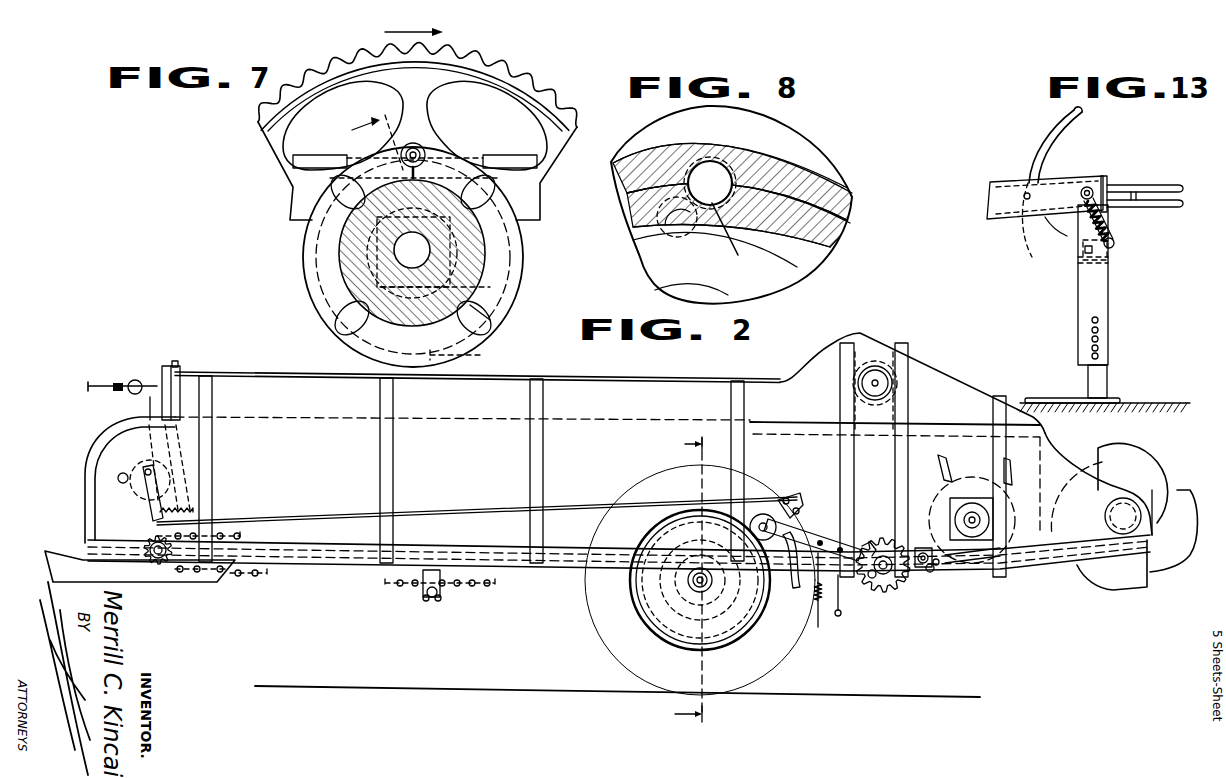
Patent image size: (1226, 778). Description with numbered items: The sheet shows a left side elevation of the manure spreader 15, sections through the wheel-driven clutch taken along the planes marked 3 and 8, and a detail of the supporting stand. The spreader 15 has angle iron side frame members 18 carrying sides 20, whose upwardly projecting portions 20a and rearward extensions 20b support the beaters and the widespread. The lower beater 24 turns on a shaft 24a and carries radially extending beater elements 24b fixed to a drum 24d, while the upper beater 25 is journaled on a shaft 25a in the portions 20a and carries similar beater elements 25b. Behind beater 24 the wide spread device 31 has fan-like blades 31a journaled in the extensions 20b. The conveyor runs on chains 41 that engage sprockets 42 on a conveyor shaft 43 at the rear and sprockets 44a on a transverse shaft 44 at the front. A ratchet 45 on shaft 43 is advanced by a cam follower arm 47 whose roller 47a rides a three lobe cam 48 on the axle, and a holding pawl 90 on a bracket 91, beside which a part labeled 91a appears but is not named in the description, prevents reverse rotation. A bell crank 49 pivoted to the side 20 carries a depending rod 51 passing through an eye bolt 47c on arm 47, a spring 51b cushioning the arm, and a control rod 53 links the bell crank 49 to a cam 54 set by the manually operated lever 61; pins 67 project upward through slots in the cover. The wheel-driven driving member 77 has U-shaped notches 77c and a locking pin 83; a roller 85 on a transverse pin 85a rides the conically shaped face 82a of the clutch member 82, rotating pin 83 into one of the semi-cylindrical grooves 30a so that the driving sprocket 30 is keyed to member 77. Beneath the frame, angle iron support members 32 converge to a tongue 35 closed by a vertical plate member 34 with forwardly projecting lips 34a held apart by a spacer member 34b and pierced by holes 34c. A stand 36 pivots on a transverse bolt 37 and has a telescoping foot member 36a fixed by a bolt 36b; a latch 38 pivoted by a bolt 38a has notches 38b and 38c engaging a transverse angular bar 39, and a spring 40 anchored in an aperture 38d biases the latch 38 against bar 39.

In FIG. 2, the section line 3- 3 is at (680, 581).
In FIG. 7, the bolt 8 is at (430, 158).
In FIG. 2, the manure spreader 15 is at (331, 579).
In FIG. 2, the side frame members 18 is at (1050, 567).
In FIG. 2, the sides 20 is at (492, 458).
In FIG. 2, the upwardly projecting portions 20a is at (957, 373).
In FIG. 2, the side extensions 20b is at (1057, 457).
In FIG. 2, the beater 24 is at (1000, 574).
In FIG. 2, the shaft 24a is at (972, 517).
In FIG. 2, the beater elements 24b is at (1008, 472).
In FIG. 2, the drum 24d is at (945, 472).
In FIG. 2, the beater 25 is at (910, 421).
In FIG. 2, the shaft 25a is at (875, 380).
In FIG. 2, the beater elements 25b is at (910, 358).
In FIG. 7, the driving sprocket 30 is at (542, 87).
In FIG. 8, the driving sprocket 30 is at (791, 167).
In FIG. 7, the semi-cylindrical transverse grooves 30a is at (485, 203).
In FIG. 8, the semi-cylindrical transverse grooves 30a is at (719, 168).
In FIG. 2, the wide spread device 31 is at (1125, 600).
In FIG. 2, the fan-like blades 31a is at (1146, 456).
In FIG. 13, the support members 32 is at (1003, 213).
In FIG. 13, the vertical plate member 34 is at (1113, 184).
In FIG. 13, the lips 34a is at (1157, 185).
In FIG. 13, the spacer member 34b is at (1123, 192).
In FIG. 13, the holes 34c is at (1182, 186).
In FIG. 13, the tongue 35 is at (1100, 172).
In FIG. 13, the stand 36 is at (1105, 334).
In FIG. 13, the adjustable foot member 36a is at (1097, 381).
In FIG. 13, the bolt 36b is at (1092, 338).
In FIG. 13, the transverse bolt 37 is at (1085, 187).
In FIG. 13, the latch 38 is at (1060, 140).
In FIG. 13, the transverse bolt 38a is at (1103, 250).
In FIG. 13, the notch 38b is at (1067, 250).
In FIG. 13, the notch 38c is at (1025, 193).
In FIG. 13, the aperture 38d is at (1114, 245).
In FIG. 13, the transverse angular bar 39 is at (1033, 227).
In FIG. 13, the spring 40 is at (1110, 227).
In FIG. 2, the conveyor chains 41 is at (481, 590).
In FIG. 2, the sprockets 42 is at (871, 578).
In FIG. 2, the conveyor shaft 43 is at (883, 576).
In FIG. 2, the transverse shaft 44 is at (155, 561).
In FIG. 2, the sprockets 44a is at (160, 570).
In FIG. 2, the ratchet 45 is at (867, 546).
In FIG. 2, the cam follower arm 47 is at (822, 540).
In FIG. 2, the roller 47a is at (765, 514).
In FIG. 2, the eye bolt 47c is at (797, 589).
In FIG. 2, the three lobe cam 48 is at (727, 638).
In FIG. 2, the bell crank 49 is at (800, 506).
In FIG. 2, the depending rod 51 is at (818, 627).
In FIG. 2, the spring 51b is at (838, 616).
In FIG. 2, the control rod 53 is at (485, 510).
In FIG. 2, the cam 54 is at (143, 493).
In FIG. 2, the manually operated lever 61 is at (158, 382).
In FIG. 2, the pins 67 is at (148, 408).
In FIG. 7, the driving member 77 is at (523, 256).
In FIG. 8, the driving member 77 is at (817, 247).
In FIG. 7, the U-shaped notches 77c is at (490, 320).
In FIG. 8, the clutch member 82 is at (730, 294).
In FIG. 8, the conically shaped face portion 82a is at (653, 250).
In FIG. 7, the locking pin 83 is at (377, 131).
In FIG. 8, the locking pin 83 is at (733, 236).
In FIG. 8, the roller 85 is at (680, 228).
In FIG. 8, the transverse pin 85a is at (670, 230).
In FIG. 2, the holding pawl 90 is at (142, 384).
In FIG. 2, the bracket 91 is at (922, 570).
In FIG. 2, the bearing pin 91a is at (937, 566).